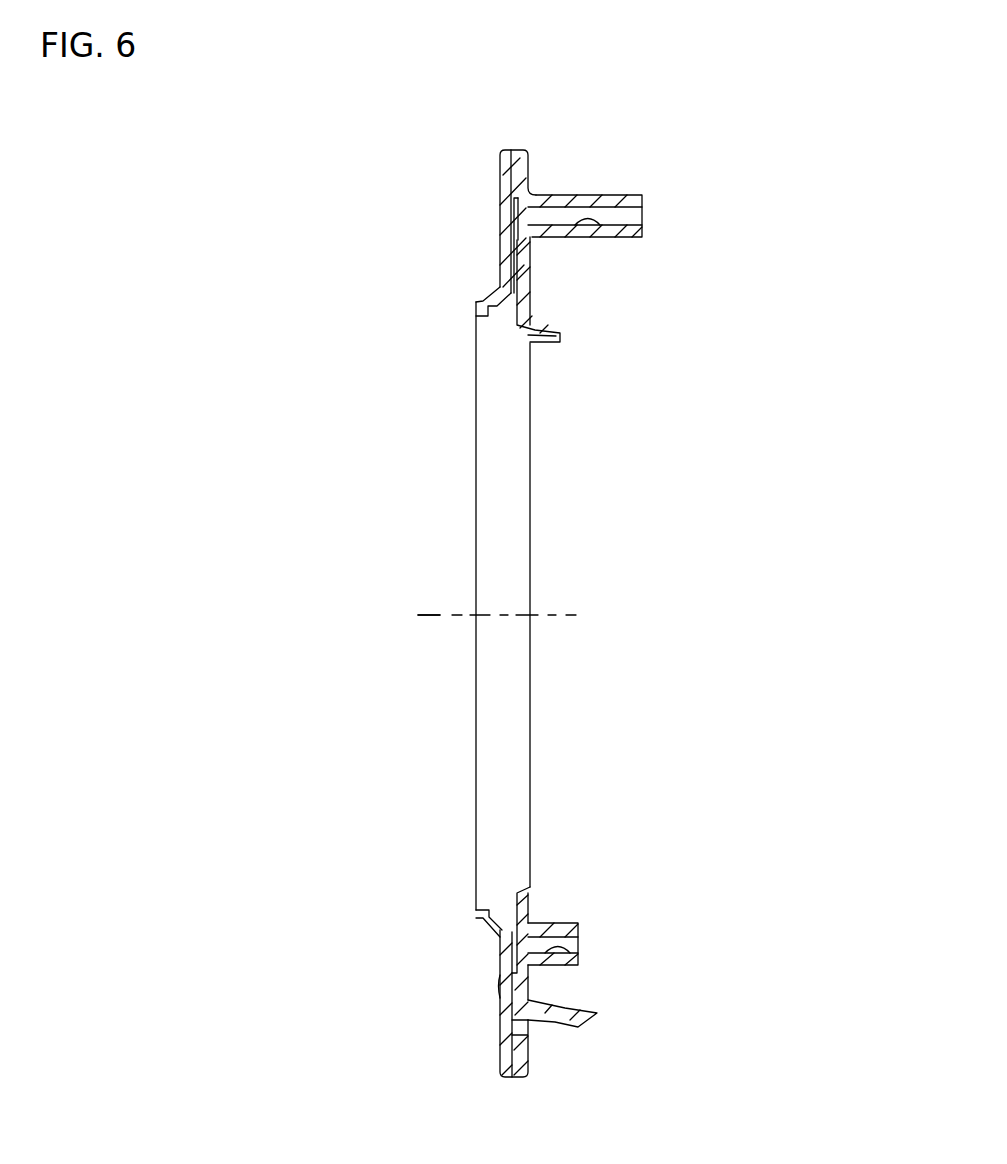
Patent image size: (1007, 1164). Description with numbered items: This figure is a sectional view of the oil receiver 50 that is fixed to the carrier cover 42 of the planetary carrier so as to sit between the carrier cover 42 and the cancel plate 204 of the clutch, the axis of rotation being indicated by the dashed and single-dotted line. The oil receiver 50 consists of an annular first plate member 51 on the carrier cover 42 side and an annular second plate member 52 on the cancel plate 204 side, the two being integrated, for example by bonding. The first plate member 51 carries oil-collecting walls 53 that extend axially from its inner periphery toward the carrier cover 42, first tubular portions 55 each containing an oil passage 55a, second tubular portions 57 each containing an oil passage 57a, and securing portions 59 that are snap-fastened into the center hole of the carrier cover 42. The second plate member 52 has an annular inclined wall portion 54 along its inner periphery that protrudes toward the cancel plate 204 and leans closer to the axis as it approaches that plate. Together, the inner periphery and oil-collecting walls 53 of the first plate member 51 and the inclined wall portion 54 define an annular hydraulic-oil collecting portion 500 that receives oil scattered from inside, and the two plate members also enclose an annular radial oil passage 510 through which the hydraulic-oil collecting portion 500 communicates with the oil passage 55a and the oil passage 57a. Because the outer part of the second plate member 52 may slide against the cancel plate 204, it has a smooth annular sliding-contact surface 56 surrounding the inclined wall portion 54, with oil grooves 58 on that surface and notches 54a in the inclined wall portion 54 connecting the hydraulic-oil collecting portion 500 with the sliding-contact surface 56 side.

The carrier cover 42 is at (656, 624).
The oil receiver 50 is at (668, 189).
The first plate member 51 is at (540, 912).
The second plate member 52 is at (490, 1012).
The oil-collecting wall 53 is at (562, 340).
The inclined wall portion 54 is at (497, 296).
The notch 54a is at (490, 925).
The first tubular portion 55 is at (578, 966).
The oil passage 55a is at (565, 924).
The sliding-contact surface 56 is at (500, 180).
The second tubular portion 57 is at (580, 195).
The oil passage 57a is at (572, 240).
The oil groove 58 is at (505, 237).
The securing portion 59 is at (592, 1016).
The cancel plate 204 is at (374, 624).
The hydraulic-oil collecting portion 500 is at (500, 314).
The oil passage 510 is at (533, 258).